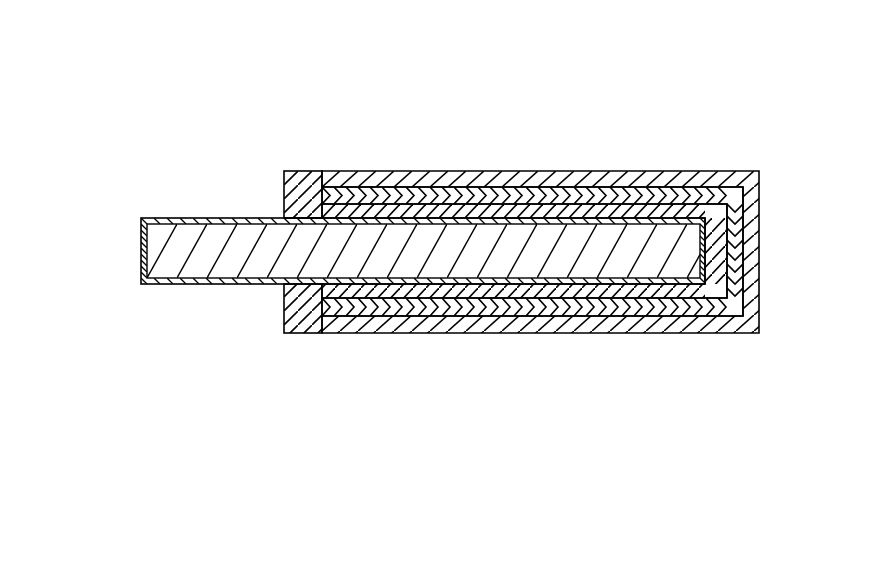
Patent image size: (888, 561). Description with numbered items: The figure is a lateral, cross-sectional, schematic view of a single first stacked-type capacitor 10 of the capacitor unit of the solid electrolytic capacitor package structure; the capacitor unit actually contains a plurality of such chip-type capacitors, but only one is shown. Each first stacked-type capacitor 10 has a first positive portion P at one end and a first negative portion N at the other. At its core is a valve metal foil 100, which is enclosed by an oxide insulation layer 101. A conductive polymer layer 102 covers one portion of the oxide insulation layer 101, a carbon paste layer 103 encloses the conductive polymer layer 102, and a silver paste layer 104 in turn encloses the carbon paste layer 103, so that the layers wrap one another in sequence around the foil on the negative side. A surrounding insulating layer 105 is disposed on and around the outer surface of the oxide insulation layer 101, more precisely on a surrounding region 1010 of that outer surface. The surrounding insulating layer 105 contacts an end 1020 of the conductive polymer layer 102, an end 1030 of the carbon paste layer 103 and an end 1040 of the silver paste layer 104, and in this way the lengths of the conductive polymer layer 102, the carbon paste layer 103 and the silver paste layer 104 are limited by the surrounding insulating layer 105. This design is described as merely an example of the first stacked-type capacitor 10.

The first stacked-type capacitor 10 is at (263, 75).
The first positive portion P is at (131, 233).
The first negative portion N is at (583, 163).
The valve metal foil 100 is at (647, 268).
The oxide insulation layer 101 is at (710, 277).
The conductive polymer layer 102 is at (717, 232).
The carbon paste layer 103 is at (730, 195).
The silver paste layer 104 is at (697, 182).
The surrounding insulating layer 105 is at (307, 318).
The surrounding region 1010 is at (293, 300).
The end of the conductive polymer layer 1020 is at (297, 213).
The end of the carbon paste layer 1030 is at (307, 195).
The end of the silver paste layer 1040 is at (312, 178).